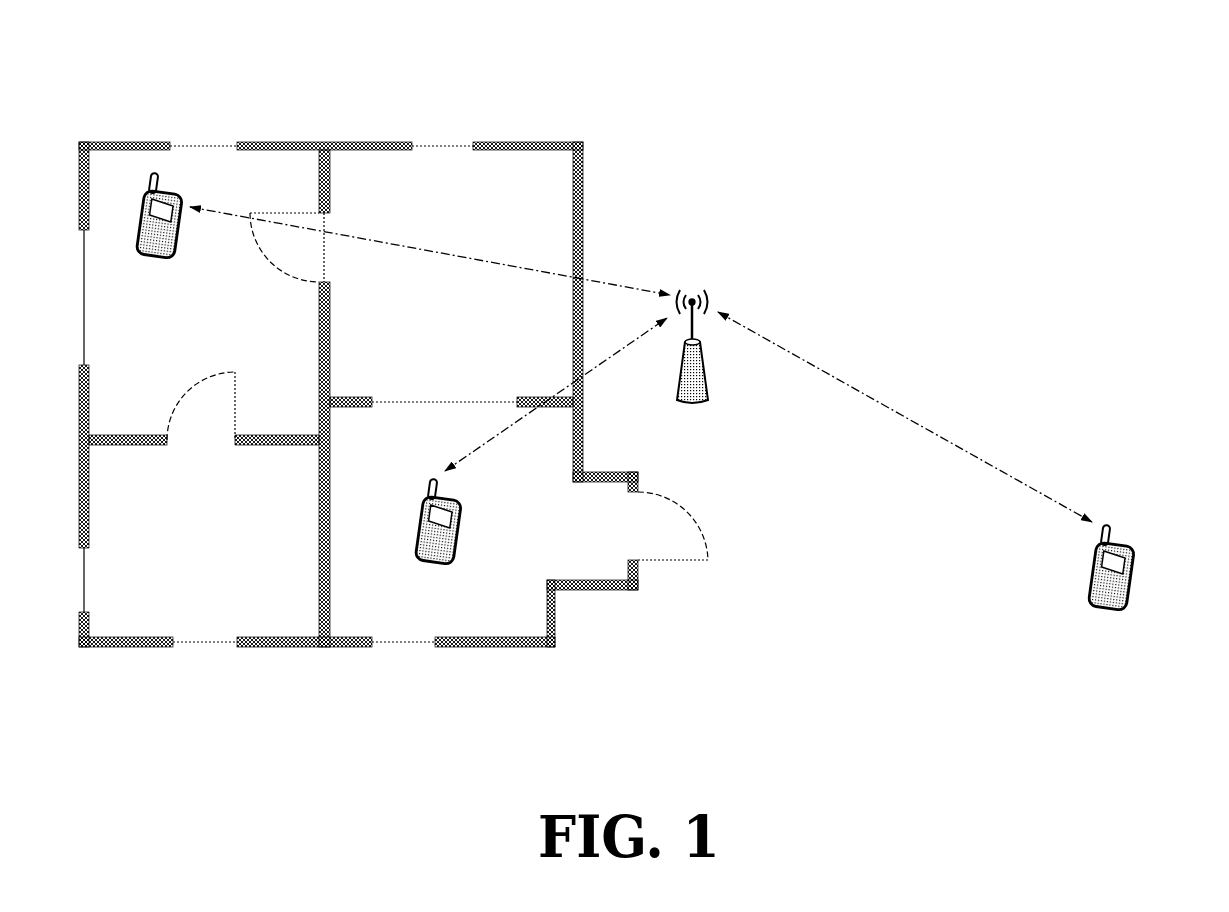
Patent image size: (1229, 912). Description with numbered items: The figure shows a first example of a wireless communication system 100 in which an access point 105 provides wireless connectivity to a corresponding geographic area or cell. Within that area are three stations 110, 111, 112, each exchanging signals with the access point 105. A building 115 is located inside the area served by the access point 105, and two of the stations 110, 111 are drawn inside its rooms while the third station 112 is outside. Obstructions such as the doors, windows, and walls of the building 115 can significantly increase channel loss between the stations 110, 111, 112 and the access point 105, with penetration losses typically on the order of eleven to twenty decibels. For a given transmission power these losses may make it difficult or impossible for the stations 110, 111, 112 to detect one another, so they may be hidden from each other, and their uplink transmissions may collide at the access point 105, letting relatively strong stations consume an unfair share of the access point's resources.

The wireless communication system 100 is at (928, 103).
The access point 105 is at (690, 405).
The station 110 is at (168, 258).
The station 111 is at (446, 566).
The station 112 is at (1117, 612).
The building 115 is at (585, 188).